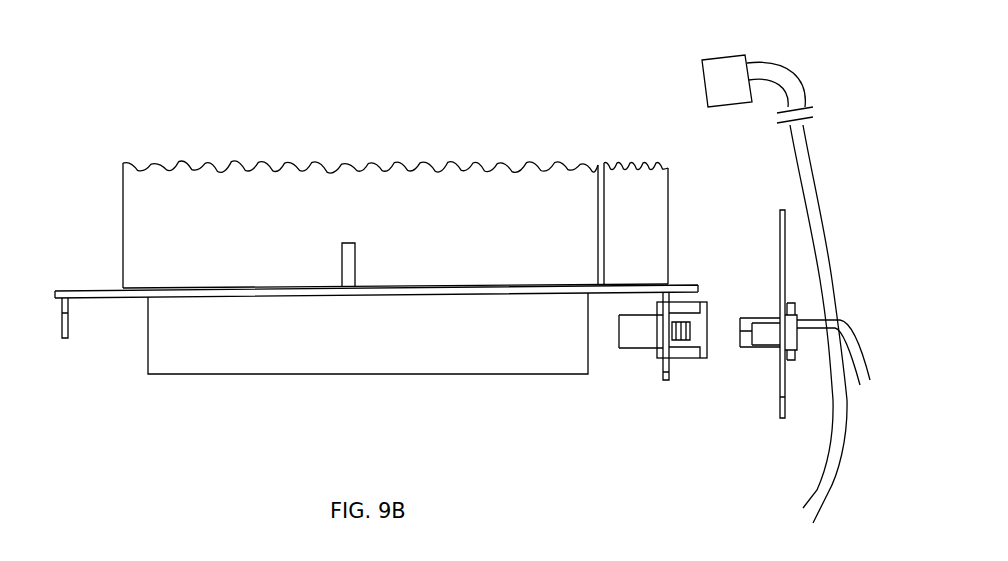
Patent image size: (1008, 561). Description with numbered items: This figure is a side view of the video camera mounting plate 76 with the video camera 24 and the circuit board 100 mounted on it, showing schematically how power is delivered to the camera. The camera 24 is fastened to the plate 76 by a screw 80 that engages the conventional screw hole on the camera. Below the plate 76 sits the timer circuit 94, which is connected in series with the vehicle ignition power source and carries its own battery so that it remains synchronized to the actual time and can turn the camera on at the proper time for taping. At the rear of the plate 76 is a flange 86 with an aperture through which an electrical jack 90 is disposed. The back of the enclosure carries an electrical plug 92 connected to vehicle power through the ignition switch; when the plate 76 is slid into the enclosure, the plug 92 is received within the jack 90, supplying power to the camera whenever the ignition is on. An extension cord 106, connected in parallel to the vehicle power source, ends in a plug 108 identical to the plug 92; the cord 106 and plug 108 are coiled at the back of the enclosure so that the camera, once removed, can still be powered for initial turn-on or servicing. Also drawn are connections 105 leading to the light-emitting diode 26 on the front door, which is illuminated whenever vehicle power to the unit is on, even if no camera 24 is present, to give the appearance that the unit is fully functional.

The camera 24 is at (197, 190).
The circuit board 100 is at (622, 178).
The video camera mounting plate 76 is at (93, 290).
The screw 80 is at (349, 267).
The timer circuit 94 is at (295, 342).
The electrical jack 90 is at (645, 340).
The flange 86 is at (667, 376).
The electrical plug 92 is at (760, 317).
The plug 108 is at (733, 53).
The extension cord 106 is at (818, 190).
The connections 105 is at (834, 463).
The light-emitting diode 26 is at (767, 539).